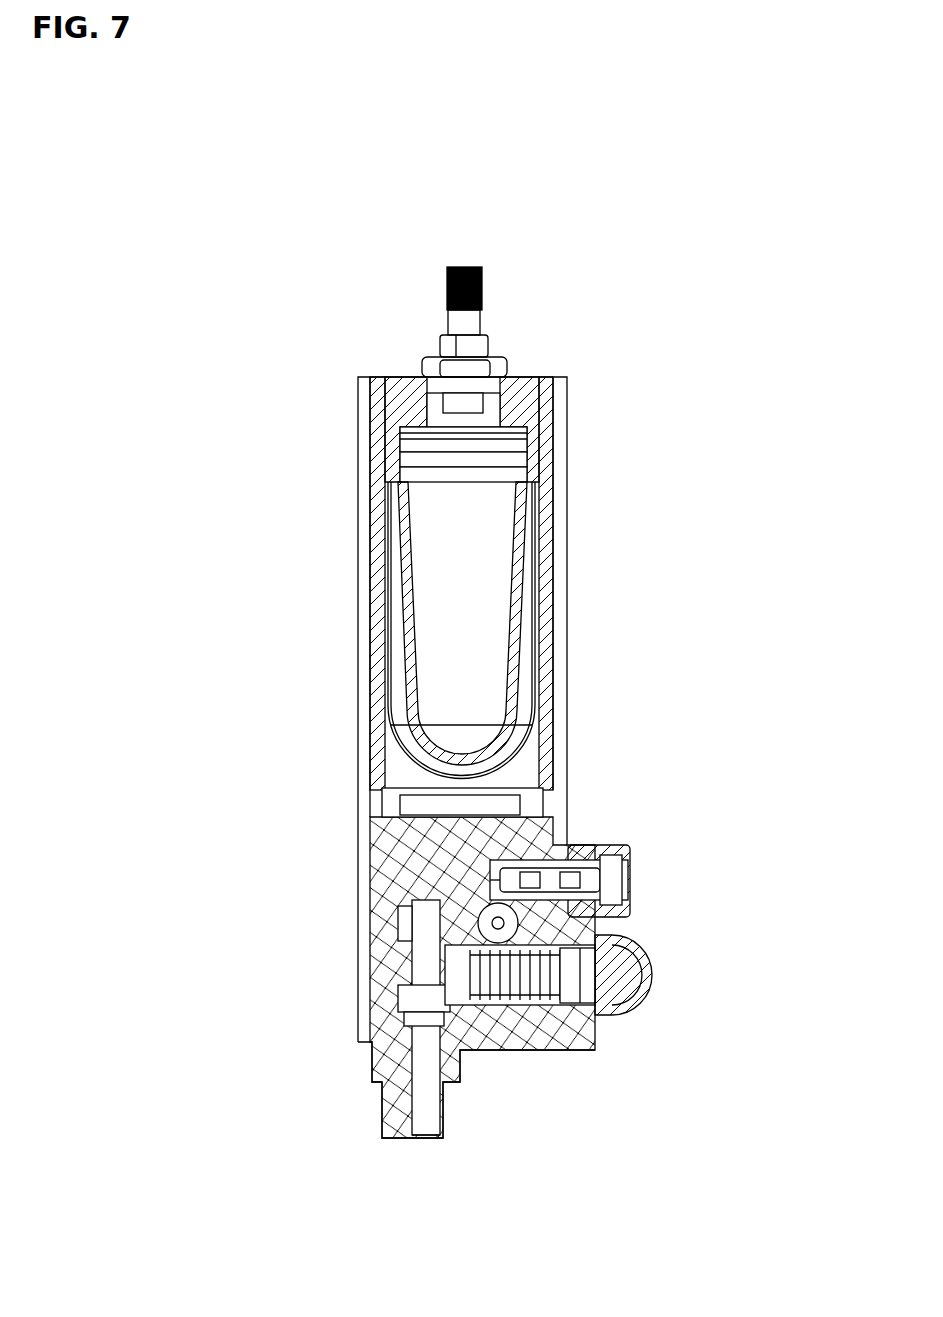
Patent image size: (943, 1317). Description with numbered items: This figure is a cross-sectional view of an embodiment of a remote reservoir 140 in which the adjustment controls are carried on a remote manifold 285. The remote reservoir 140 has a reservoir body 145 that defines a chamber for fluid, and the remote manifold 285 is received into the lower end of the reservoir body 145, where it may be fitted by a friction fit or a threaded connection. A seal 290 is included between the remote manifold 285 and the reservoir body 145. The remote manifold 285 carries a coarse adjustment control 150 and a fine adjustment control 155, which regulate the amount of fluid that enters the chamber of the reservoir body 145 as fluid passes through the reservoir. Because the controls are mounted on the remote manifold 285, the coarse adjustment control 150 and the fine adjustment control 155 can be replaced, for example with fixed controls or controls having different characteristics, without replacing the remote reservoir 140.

The remote reservoir 140 is at (250, 308).
The reservoir body 145 is at (358, 660).
The seal 290 is at (357, 810).
The remote manifold 285 is at (352, 869).
The fine adjustment control 155 is at (636, 849).
The coarse adjustment control 150 is at (654, 958).